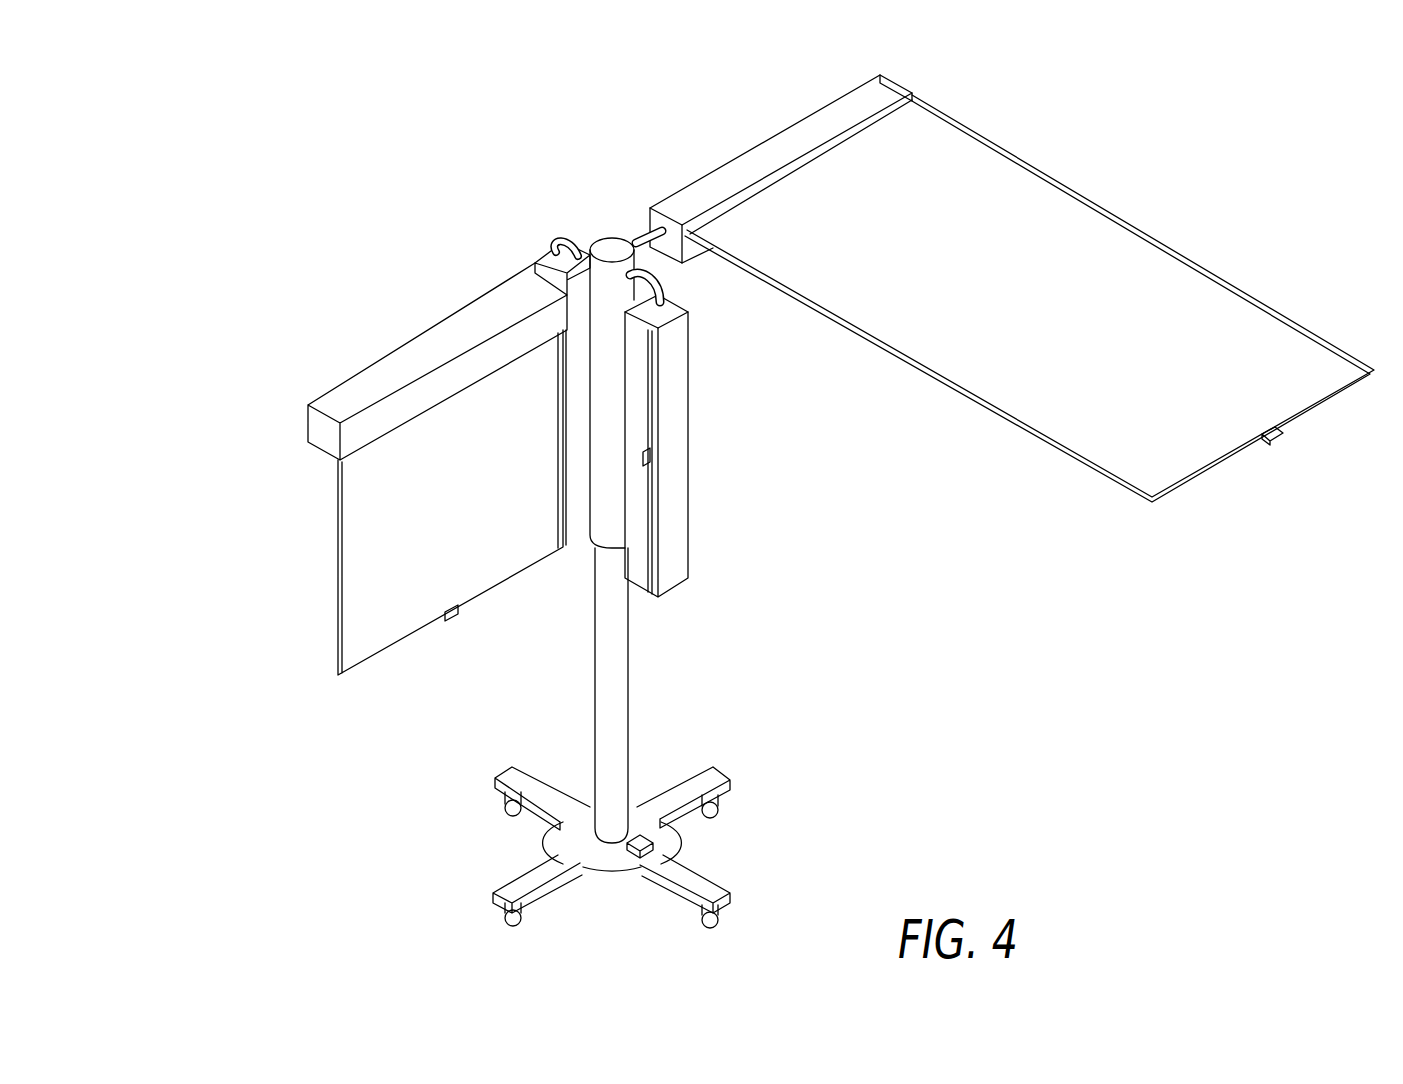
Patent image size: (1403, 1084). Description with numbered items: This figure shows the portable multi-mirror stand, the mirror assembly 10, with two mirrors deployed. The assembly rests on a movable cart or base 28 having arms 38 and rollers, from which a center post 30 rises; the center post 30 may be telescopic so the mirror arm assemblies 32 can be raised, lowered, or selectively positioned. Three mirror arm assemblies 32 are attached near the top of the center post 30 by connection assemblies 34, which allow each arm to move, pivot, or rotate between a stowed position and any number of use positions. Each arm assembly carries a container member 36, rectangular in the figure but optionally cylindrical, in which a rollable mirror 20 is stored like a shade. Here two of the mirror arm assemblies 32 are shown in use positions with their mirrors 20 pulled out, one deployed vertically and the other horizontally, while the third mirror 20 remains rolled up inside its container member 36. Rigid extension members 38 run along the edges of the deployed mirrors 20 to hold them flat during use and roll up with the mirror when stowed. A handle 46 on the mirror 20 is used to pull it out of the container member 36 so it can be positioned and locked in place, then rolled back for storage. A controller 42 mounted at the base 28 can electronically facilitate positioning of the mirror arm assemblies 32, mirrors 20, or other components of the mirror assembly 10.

The mirror assembly 10 is at (381, 222).
The mirror 20 is at (1032, 311).
The base 28 is at (933, 528).
The center post 30 is at (628, 707).
The mirror arm assembly 32 is at (613, 388).
The connection assembly 34 is at (655, 240).
The container member 36 is at (892, 96).
The rigid extension member 38 is at (713, 775).
The controller 42 is at (647, 837).
The handle 46 is at (1268, 442).